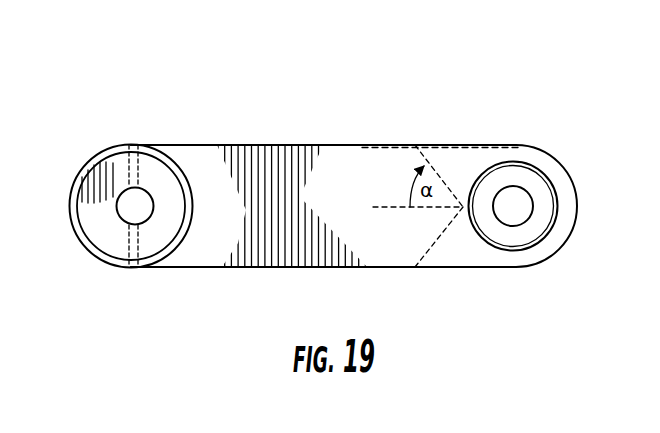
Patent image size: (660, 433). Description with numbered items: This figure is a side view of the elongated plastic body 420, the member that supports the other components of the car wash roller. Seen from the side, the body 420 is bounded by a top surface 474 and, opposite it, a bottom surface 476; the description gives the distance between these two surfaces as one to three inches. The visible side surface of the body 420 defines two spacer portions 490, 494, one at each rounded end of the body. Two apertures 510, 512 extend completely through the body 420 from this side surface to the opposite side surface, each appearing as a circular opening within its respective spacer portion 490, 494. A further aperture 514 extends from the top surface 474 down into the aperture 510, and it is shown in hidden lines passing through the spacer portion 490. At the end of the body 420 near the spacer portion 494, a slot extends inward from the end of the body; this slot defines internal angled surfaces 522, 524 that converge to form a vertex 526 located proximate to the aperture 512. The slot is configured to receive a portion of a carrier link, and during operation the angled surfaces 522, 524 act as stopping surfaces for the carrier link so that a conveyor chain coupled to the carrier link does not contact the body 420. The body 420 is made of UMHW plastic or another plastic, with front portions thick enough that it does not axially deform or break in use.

The elongated plastic body 420 is at (356, 78).
The top surface 474 is at (352, 145).
The bottom surface 476 is at (340, 268).
The spacer portion 490 is at (104, 166).
The spacer portion 494 is at (523, 177).
The aperture 510 is at (117, 206).
The aperture 512 is at (522, 212).
The aperture 514 is at (142, 168).
The internal angled surface 522 is at (440, 177).
The internal angled surface 524 is at (432, 247).
The vertex 526 is at (466, 213).